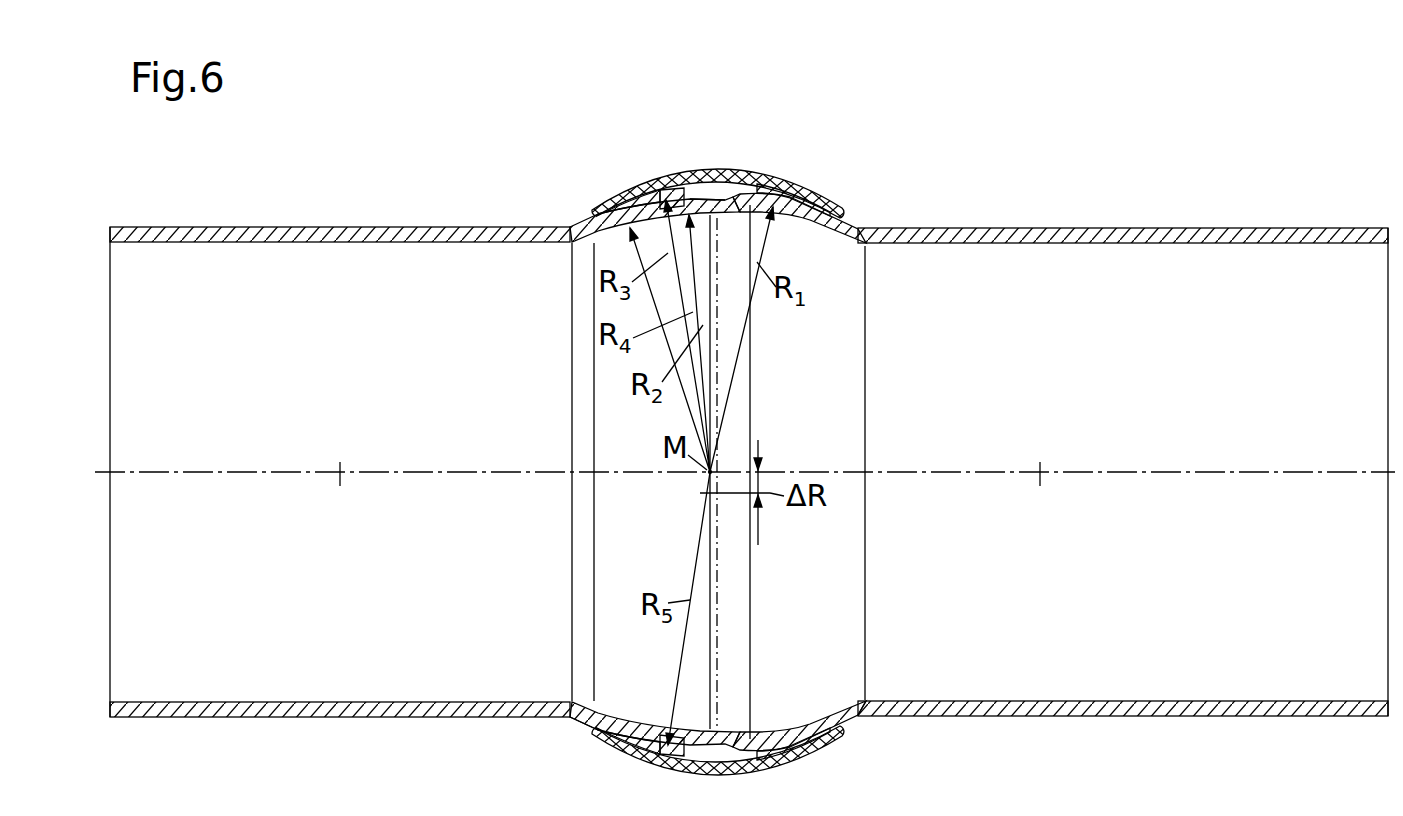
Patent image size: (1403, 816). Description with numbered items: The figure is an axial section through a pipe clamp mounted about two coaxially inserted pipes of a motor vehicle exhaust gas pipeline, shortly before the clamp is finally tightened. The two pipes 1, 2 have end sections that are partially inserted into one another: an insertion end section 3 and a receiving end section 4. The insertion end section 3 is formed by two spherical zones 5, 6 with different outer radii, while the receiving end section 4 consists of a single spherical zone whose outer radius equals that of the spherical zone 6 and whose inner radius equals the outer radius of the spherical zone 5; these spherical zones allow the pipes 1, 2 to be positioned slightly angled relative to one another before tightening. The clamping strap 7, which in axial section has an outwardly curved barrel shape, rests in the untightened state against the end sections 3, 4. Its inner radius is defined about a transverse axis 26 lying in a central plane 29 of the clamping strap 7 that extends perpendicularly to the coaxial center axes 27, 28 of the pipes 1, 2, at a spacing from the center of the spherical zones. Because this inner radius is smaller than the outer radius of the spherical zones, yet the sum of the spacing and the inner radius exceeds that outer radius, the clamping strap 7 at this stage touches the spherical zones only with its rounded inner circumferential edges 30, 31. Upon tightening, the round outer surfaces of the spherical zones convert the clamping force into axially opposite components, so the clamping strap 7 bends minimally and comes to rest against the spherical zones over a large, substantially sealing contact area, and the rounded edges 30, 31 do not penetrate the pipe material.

The pipe 1 is at (283, 228).
The pipe 2 is at (1118, 196).
The insertion end section 3 is at (763, 192).
The receiving end section 4 is at (668, 192).
The spherical zone 5 is at (640, 206).
The spherical zone 6 is at (800, 200).
The clamping strap 7 is at (708, 176).
The transverse axis 26 is at (710, 490).
The center axis 27 is at (339, 500).
The center axis 28 is at (1039, 500).
The central plane 29 is at (718, 600).
The inner circumferential edge 30 is at (577, 712).
The inner circumferential edge 31 is at (858, 708).